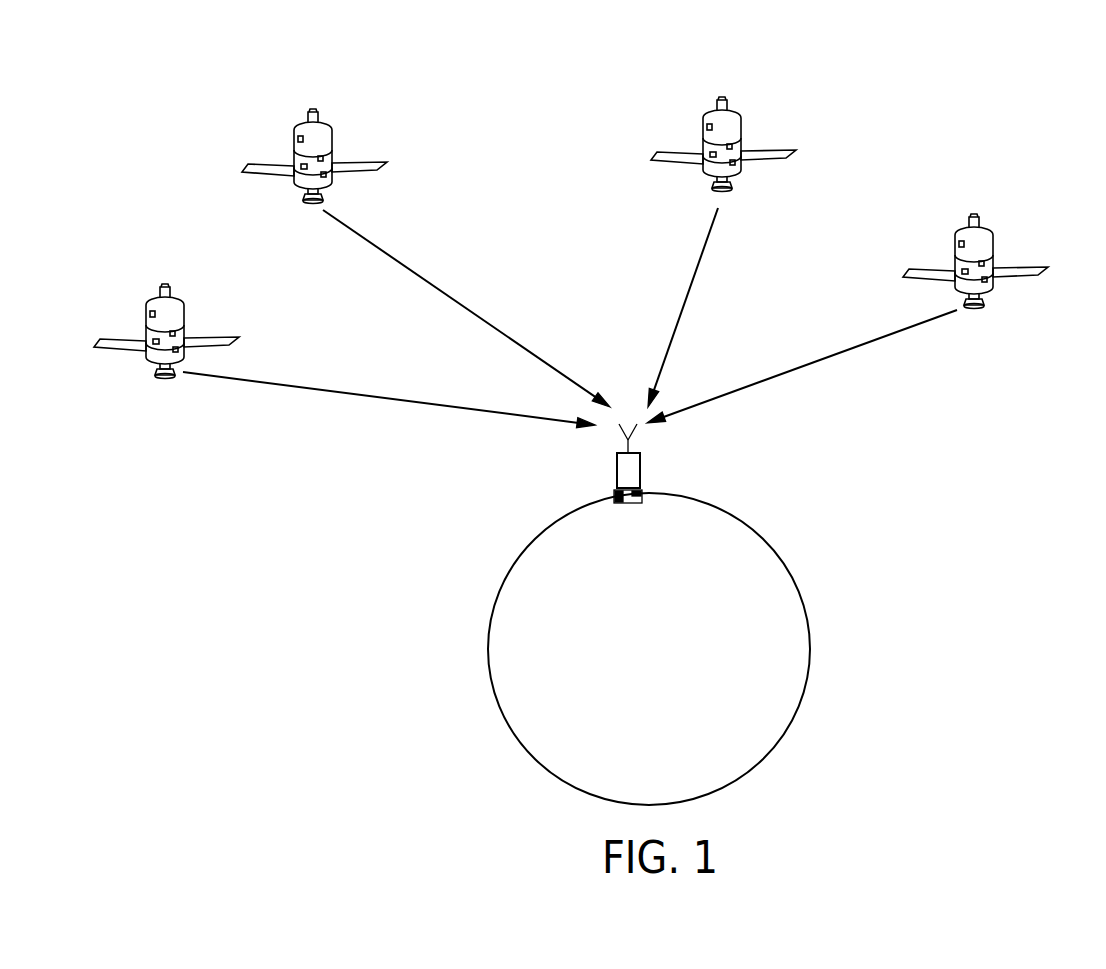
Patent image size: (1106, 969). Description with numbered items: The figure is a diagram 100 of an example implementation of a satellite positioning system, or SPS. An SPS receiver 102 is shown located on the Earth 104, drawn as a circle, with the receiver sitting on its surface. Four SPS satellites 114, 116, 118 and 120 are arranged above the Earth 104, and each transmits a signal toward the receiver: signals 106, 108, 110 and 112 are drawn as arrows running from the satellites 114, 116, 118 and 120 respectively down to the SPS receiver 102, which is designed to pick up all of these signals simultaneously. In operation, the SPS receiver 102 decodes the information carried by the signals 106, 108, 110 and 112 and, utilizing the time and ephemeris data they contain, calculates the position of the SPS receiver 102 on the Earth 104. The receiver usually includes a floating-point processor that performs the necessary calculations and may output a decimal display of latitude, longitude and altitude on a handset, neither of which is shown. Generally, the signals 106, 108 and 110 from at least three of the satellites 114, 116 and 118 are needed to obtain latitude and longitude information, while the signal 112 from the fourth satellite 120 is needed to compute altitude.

The diagram 100 is at (877, 187).
The SPS receiver 102 is at (640, 475).
The Earth 104 is at (631, 699).
The signal 106 is at (305, 385).
The signal 108 is at (443, 290).
The signal 110 is at (690, 288).
The signal 112 is at (807, 372).
The SPS satellite 114 is at (167, 283).
The SPS satellite 116 is at (315, 110).
The SPS satellite 118 is at (725, 97).
The fourth satellite 120 is at (977, 214).